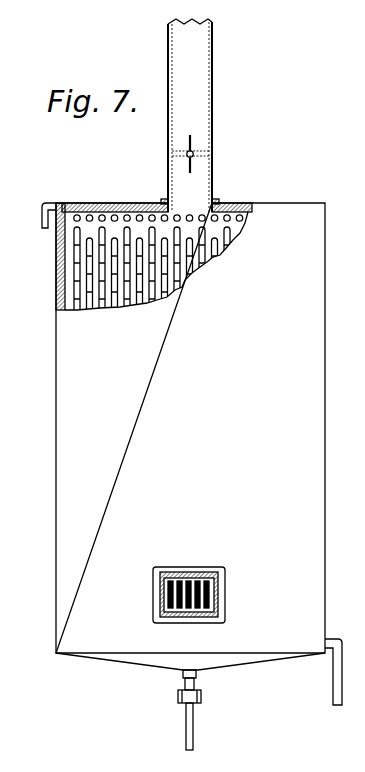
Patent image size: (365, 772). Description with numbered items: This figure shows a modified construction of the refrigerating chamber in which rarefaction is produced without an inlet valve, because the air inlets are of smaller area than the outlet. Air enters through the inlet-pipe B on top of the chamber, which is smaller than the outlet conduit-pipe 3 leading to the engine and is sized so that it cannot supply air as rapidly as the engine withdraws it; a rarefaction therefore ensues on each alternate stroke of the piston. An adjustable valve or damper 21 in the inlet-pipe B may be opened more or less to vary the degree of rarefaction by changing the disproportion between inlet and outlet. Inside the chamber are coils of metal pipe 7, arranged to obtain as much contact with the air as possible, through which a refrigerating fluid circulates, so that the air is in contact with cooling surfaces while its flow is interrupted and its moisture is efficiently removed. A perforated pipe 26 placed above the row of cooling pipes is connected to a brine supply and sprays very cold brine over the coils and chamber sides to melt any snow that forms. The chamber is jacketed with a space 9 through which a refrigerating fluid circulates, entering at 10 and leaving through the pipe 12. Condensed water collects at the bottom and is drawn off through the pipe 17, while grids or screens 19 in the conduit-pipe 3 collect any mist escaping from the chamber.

The inlet-pipe B is at (190, 115).
The adjustable valve or damper 21 is at (192, 143).
The perforated pipe 26 is at (79, 214).
The jacket space 9 is at (58, 288).
The coils of metal pipe 7 is at (167, 276).
The pipe 12 is at (30, 218).
The entering point of refrigerating fluid 10 is at (325, 672).
The pipe 17 is at (191, 728).
The conduit-pipe 3 is at (213, 603).
The grids or screens 19 is at (172, 598).